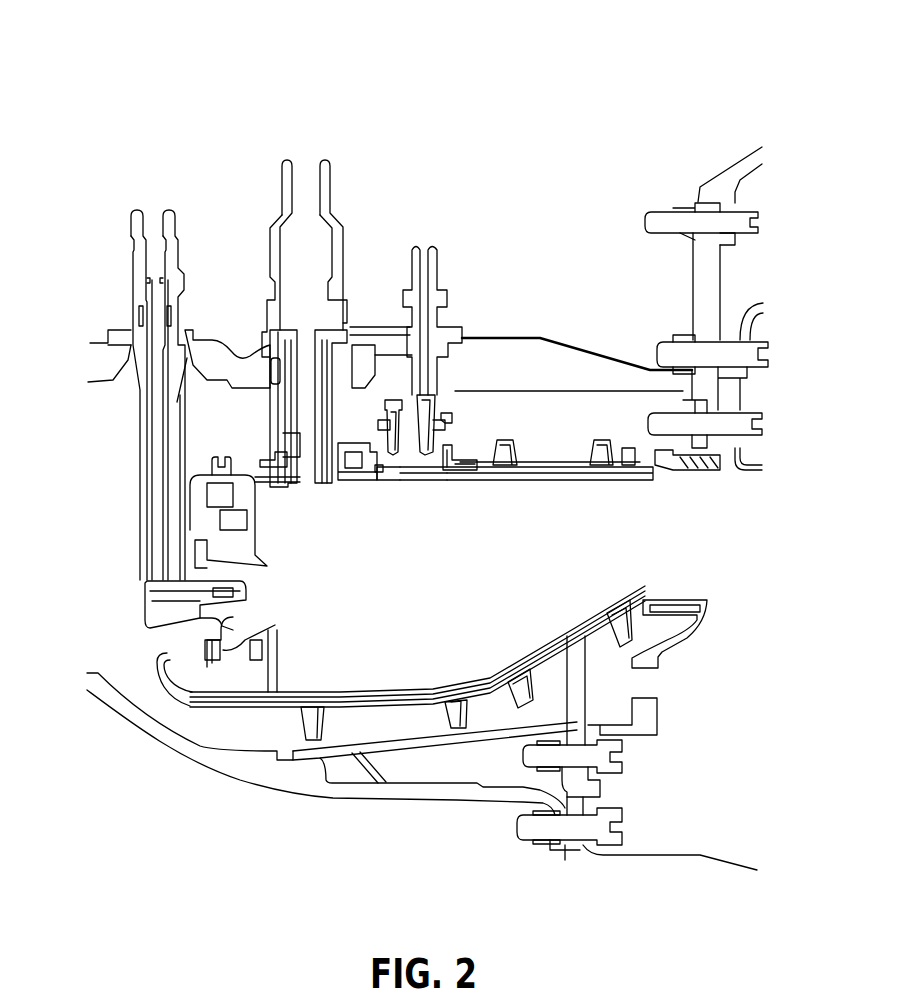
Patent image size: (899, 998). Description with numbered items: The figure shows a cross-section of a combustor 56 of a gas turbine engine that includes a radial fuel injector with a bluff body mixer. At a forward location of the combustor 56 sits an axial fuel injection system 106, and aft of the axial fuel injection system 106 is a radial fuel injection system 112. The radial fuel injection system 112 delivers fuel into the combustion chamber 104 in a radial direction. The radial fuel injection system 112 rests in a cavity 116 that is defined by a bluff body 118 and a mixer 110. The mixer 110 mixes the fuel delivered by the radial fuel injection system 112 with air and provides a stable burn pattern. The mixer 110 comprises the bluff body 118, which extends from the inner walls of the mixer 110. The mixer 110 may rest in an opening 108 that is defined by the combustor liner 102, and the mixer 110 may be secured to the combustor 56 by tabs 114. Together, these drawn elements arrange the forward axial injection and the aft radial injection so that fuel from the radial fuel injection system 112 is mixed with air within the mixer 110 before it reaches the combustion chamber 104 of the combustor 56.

The combustor 56 is at (118, 66).
The combustor liner 102 is at (537, 470).
The combustion chamber 104 is at (375, 627).
The axial fuel injection system 106 is at (150, 601).
The opening 108 is at (374, 478).
The mixer 110 is at (441, 478).
The radial fuel injection system 112 is at (436, 420).
The tabs 114 is at (480, 447).
The cavity 116 is at (405, 465).
The bluff body 118 is at (428, 478).